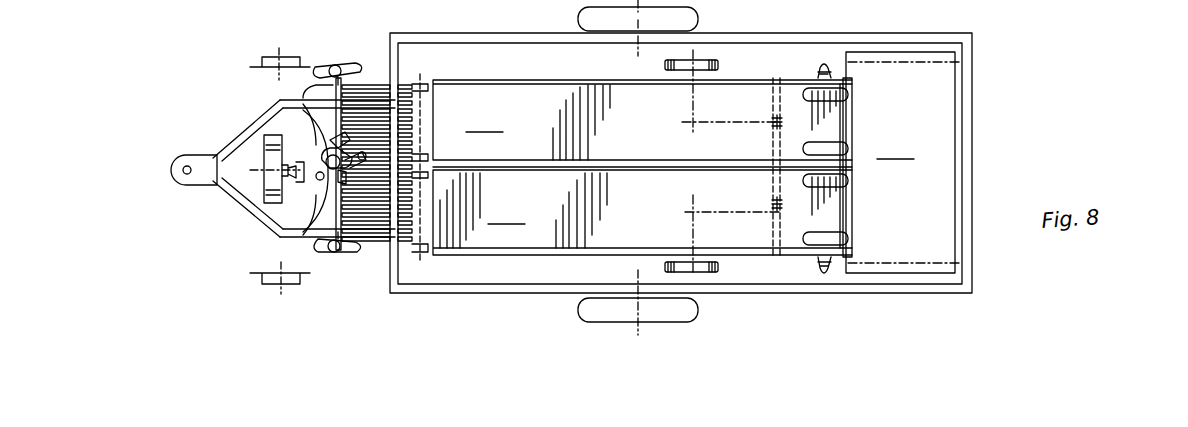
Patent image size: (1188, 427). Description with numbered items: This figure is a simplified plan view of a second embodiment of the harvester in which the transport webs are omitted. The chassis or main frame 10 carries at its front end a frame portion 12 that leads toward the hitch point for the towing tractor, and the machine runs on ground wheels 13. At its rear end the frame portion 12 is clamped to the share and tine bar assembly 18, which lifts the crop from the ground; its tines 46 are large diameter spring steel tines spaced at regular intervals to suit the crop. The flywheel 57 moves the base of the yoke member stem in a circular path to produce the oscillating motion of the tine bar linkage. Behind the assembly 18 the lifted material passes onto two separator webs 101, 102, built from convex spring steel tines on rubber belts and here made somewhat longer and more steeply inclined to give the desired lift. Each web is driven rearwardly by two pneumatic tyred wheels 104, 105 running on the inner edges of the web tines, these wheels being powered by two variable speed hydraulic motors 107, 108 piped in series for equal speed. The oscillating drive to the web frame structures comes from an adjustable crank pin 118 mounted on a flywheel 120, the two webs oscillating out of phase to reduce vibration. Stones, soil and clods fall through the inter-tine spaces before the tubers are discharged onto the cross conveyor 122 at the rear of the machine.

The chassis or main frame 10 is at (490, 292).
The frame portion 12 is at (240, 198).
The ground wheels 13 is at (578, 18).
The share and tine bar assembly 18 is at (329, 258).
The tines 46 is at (376, 82).
The flywheel 57 is at (265, 157).
The separator web 101 is at (642, 123).
The separator web 102 is at (642, 212).
The pneumatic tyred wheel 104 is at (806, 95).
The pneumatic tyred wheel 105 is at (808, 150).
The variable speed hydraulic motor 107 is at (827, 58).
The variable speed hydraulic motor 108 is at (832, 266).
The crank pin 118 is at (734, 118).
The flywheel 120 is at (708, 58).
The cross conveyor 122 is at (904, 162).